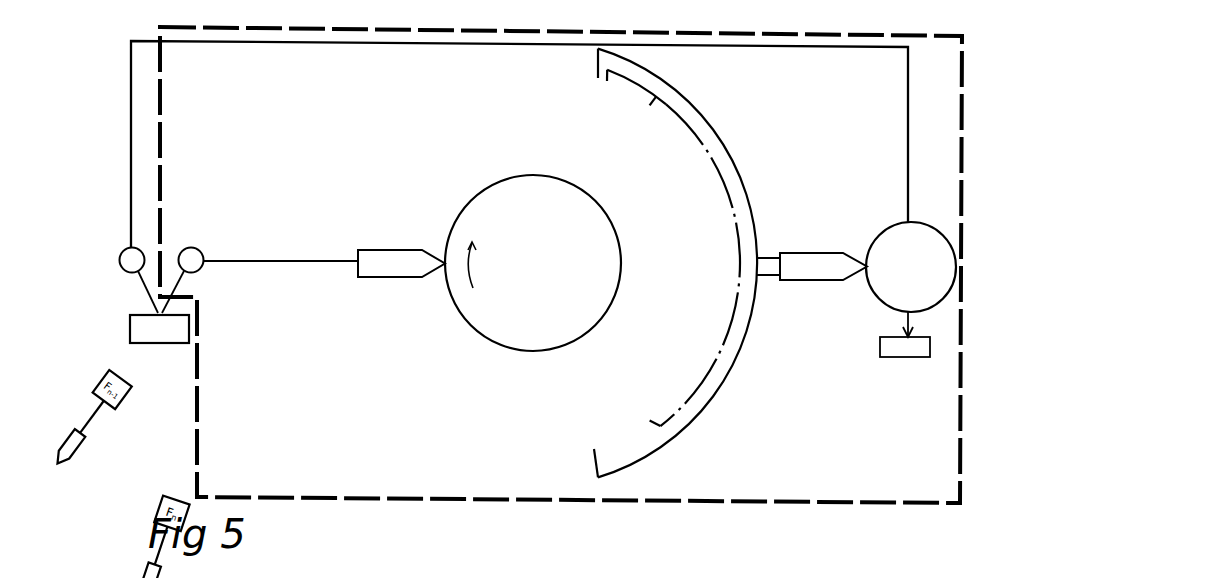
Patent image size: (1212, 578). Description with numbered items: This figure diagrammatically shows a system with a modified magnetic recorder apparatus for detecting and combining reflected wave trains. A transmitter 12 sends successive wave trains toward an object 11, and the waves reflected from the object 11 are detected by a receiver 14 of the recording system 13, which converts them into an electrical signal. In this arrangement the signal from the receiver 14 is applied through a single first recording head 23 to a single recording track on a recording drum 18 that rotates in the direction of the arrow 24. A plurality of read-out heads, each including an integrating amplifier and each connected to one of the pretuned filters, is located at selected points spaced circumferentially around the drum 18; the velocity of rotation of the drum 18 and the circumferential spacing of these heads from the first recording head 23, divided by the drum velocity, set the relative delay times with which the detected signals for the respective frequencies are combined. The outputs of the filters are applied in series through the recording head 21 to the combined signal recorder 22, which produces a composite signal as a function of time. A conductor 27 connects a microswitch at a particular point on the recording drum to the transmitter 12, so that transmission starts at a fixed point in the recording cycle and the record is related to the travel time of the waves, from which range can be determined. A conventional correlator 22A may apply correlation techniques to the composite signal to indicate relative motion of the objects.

The object 11 is at (158, 345).
The transmitter 12 is at (140, 247).
The recording system 13 is at (492, 503).
The receiver 14 is at (200, 247).
The recording drum 18 is at (493, 347).
The recording head 21 is at (822, 252).
The combined signal recorder 22 is at (919, 221).
The correlator 22A is at (905, 334).
The first recording head 23 is at (387, 249).
The arrow 24 is at (472, 270).
The conductor 27 is at (908, 135).